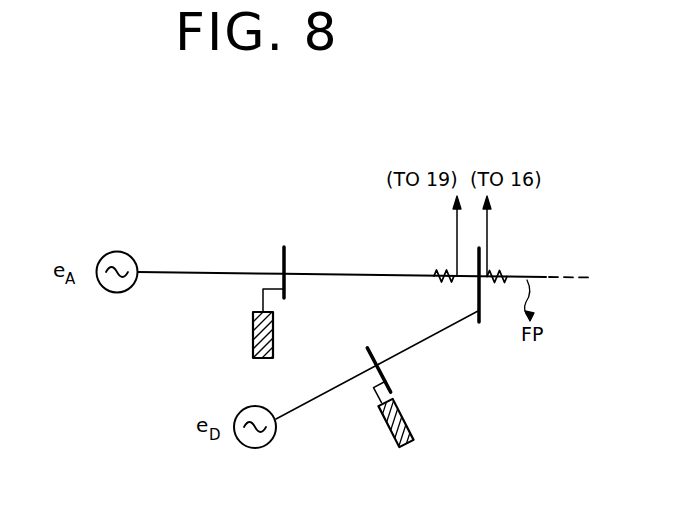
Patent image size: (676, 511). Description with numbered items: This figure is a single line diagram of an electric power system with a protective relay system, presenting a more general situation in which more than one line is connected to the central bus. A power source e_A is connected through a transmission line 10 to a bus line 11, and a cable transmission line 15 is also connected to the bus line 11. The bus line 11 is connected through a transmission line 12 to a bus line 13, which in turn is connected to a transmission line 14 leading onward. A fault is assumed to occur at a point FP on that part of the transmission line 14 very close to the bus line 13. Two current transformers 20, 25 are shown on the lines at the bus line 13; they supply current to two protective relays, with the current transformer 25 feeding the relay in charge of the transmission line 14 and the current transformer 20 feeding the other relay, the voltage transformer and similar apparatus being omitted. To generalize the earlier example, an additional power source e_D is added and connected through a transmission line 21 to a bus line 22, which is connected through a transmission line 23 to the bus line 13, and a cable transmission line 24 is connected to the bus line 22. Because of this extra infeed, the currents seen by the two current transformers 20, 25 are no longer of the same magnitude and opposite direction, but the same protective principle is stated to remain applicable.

The transmission line 10 is at (211, 272).
The bus line 11 is at (283, 249).
The transmission line 12 is at (339, 273).
The bus line 13 is at (479, 324).
The transmission line 14 is at (546, 276).
The cable transmission line 15 is at (253, 333).
The current transformer 20 is at (440, 270).
The transmission line 21 is at (295, 408).
The bus line 22 is at (377, 356).
The transmission line 23 is at (432, 337).
The cable transmission line 24 is at (383, 417).
The current transformer 25 is at (498, 272).